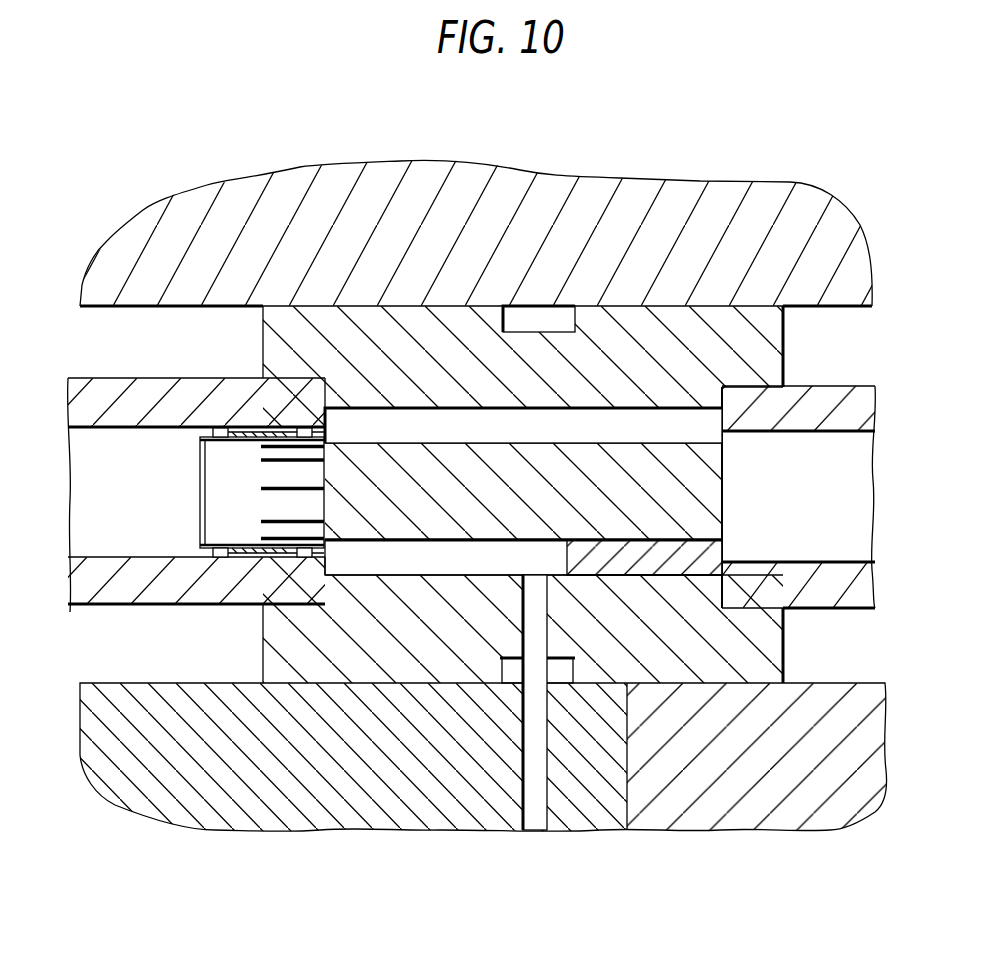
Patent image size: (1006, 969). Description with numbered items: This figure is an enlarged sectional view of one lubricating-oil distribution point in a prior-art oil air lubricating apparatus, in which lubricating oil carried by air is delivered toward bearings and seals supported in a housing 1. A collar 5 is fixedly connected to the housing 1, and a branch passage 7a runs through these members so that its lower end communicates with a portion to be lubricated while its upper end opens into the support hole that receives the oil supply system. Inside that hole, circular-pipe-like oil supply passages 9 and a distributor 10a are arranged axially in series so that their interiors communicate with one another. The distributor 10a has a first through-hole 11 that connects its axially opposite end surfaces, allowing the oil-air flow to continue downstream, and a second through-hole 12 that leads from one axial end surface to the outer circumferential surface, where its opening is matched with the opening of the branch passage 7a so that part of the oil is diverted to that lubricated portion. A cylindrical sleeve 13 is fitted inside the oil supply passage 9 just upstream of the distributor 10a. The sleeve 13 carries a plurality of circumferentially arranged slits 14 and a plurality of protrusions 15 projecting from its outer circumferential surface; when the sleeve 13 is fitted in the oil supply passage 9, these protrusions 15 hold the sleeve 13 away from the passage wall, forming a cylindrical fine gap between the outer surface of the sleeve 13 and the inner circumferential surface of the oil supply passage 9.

The housing 1 is at (818, 232).
The collar 5 is at (322, 790).
The branch passage 7a is at (546, 785).
The circular-pipe-like oil supply passage 9 is at (112, 396).
The distributor 10a is at (685, 328).
The first through-hole 11 is at (492, 420).
The second through-hole 12 is at (500, 573).
The cylindrical sleeve 13 is at (200, 500).
The slit 14 is at (277, 460).
The protrusion 15 is at (304, 428).